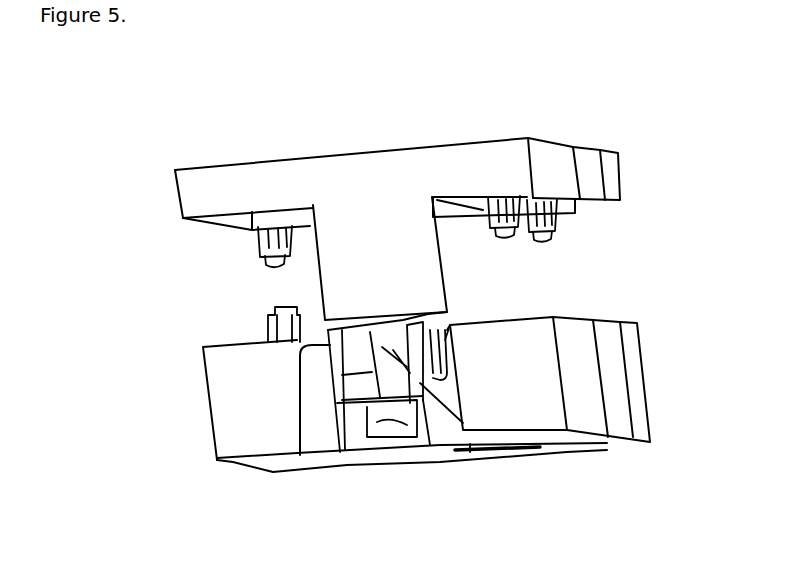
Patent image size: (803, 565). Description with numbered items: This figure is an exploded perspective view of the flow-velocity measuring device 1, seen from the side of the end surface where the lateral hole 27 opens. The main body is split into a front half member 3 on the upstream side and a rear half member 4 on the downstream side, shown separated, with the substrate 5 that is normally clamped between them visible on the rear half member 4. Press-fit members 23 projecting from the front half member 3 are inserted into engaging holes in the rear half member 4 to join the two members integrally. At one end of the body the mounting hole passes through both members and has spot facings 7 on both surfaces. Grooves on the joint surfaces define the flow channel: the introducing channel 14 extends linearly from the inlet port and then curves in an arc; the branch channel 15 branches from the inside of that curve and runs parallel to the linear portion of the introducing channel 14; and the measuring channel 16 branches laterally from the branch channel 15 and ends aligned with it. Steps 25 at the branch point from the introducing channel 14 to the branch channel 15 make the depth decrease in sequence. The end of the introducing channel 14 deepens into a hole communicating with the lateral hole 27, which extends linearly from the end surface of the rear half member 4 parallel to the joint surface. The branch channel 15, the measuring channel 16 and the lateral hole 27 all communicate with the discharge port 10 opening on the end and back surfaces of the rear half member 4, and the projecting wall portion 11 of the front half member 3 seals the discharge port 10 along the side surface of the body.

The flow-velocity measuring device 1 is at (107, 117).
The front half member 3 is at (198, 192).
The rear half member 4 is at (240, 417).
The substrate 5 is at (268, 323).
The spot facings 7 is at (537, 448).
The discharge port 10 is at (420, 455).
The projecting wall portion 11 is at (363, 282).
The introducing channel 14 is at (338, 455).
The branch channel 15 is at (482, 440).
The measuring channel 16 is at (299, 458).
The press-fit member 23 is at (260, 257).
The steps 25 is at (450, 323).
The lateral hole (discharge channel) 27 is at (373, 450).